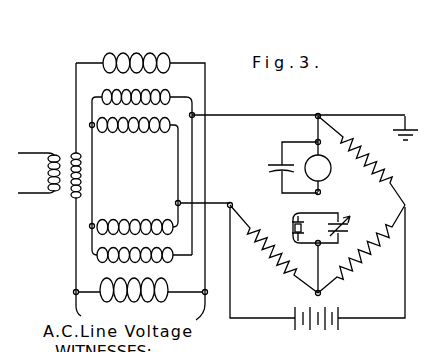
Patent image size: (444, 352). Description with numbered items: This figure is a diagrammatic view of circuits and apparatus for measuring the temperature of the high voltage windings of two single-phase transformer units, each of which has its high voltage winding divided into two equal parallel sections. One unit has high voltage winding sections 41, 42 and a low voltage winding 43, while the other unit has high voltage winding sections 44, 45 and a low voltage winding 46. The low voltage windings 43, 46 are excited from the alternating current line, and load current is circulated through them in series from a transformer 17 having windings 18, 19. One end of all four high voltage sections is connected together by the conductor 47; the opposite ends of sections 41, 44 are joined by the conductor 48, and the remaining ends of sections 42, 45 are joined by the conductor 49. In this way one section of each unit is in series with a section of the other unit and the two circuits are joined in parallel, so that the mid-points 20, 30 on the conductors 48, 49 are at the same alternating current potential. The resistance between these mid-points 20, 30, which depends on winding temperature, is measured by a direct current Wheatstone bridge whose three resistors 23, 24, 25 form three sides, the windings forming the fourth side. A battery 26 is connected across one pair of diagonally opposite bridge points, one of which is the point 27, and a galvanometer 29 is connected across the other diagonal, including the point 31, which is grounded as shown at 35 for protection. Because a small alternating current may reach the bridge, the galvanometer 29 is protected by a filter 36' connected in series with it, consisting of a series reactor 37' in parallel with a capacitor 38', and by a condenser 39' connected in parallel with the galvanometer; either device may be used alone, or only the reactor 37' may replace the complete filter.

The transformer 17 is at (31, 165).
The winding 18 is at (52, 195).
The winding 19 is at (75, 208).
The mid-point 20 is at (196, 114).
The resistor 23 is at (271, 262).
The resistor 24 is at (355, 271).
The resistor 25 is at (379, 156).
The battery 26 is at (328, 327).
The terminal point of the bridge 27 is at (232, 204).
The galvanometer 29 is at (329, 174).
The mid-point 30 is at (177, 202).
The terminal point of the bridge 31 is at (319, 114).
The ground 35 is at (409, 129).
The filter 36' is at (333, 267).
The series reactor 37' is at (292, 228).
The capacitor 38' is at (349, 228).
The condenser 39' is at (279, 167).
The high voltage winding section 41 is at (140, 132).
The high voltage winding section 42 is at (162, 93).
The low voltage winding 43 is at (137, 56).
The high voltage winding section 44 is at (155, 221).
The high voltage winding section 45 is at (118, 263).
The low voltage winding 46 is at (127, 297).
The conductor 47 is at (93, 184).
The conductor 48 is at (177, 175).
The conductor 49 is at (191, 143).